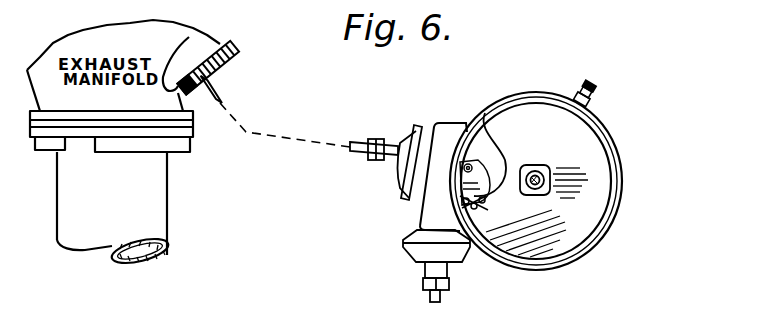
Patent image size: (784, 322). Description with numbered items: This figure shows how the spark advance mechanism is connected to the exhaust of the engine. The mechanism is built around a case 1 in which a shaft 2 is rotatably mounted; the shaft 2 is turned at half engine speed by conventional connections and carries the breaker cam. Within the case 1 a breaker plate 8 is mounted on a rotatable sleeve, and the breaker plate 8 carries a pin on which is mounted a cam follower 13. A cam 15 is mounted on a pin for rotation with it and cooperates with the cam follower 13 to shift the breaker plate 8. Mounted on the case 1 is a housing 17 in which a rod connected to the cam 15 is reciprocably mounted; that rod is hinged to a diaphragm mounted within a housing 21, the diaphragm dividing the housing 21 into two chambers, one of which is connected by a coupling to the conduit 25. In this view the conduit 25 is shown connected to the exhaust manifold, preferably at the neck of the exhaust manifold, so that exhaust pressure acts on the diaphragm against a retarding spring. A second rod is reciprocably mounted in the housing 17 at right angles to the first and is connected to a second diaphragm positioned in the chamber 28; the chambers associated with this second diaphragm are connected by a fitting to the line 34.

The case 1 is at (522, 95).
The shaft 2 is at (538, 176).
The breaker plate 8 is at (596, 196).
The cam follower 13 is at (487, 202).
The cam 15 is at (458, 196).
The housing 17 is at (456, 123).
The housing 21 is at (417, 126).
The conduit 25 is at (362, 142).
The chamber 28 is at (406, 238).
The line 34 is at (441, 297).